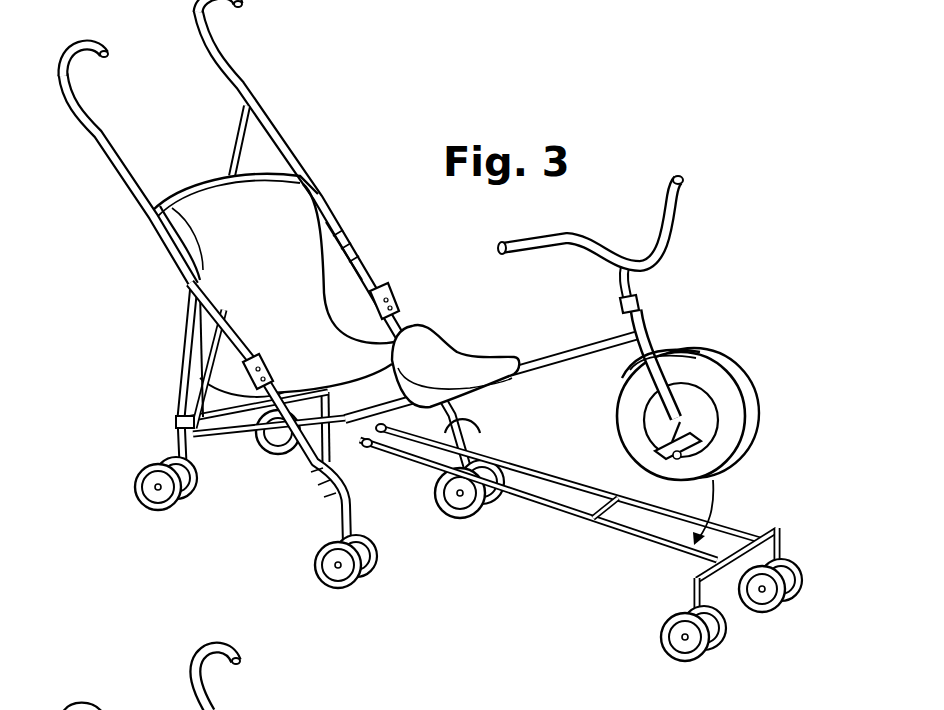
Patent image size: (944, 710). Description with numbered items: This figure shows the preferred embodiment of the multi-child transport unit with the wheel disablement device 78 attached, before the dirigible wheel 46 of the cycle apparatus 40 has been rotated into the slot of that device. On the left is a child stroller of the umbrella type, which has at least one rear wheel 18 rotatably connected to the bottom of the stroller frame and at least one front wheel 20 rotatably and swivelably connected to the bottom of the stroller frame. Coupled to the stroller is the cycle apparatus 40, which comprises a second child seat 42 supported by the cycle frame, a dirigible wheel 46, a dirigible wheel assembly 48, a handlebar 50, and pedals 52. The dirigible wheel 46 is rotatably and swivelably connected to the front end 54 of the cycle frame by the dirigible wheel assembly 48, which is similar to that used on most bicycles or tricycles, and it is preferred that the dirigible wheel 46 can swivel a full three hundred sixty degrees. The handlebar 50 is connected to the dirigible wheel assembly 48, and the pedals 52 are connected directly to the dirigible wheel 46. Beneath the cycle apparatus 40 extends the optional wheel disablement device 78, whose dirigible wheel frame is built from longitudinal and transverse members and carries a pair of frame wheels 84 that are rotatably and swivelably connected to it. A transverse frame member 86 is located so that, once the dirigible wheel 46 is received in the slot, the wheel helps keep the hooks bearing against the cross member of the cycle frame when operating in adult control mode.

The rear wheel 18 is at (148, 486).
The front wheel 20 is at (318, 566).
The cycle apparatus 40 is at (564, 358).
The second child seat 42 is at (433, 334).
The dirigible wheel 46 is at (740, 378).
The dirigible wheel assembly 48 is at (640, 303).
The handlebar 50 is at (683, 180).
The pedals 52 is at (703, 440).
The front end of the cycle frame 54 is at (656, 333).
The wheel disablement device 78 is at (520, 498).
The frame wheel 84 is at (700, 660).
The transverse frame member 86 is at (608, 512).